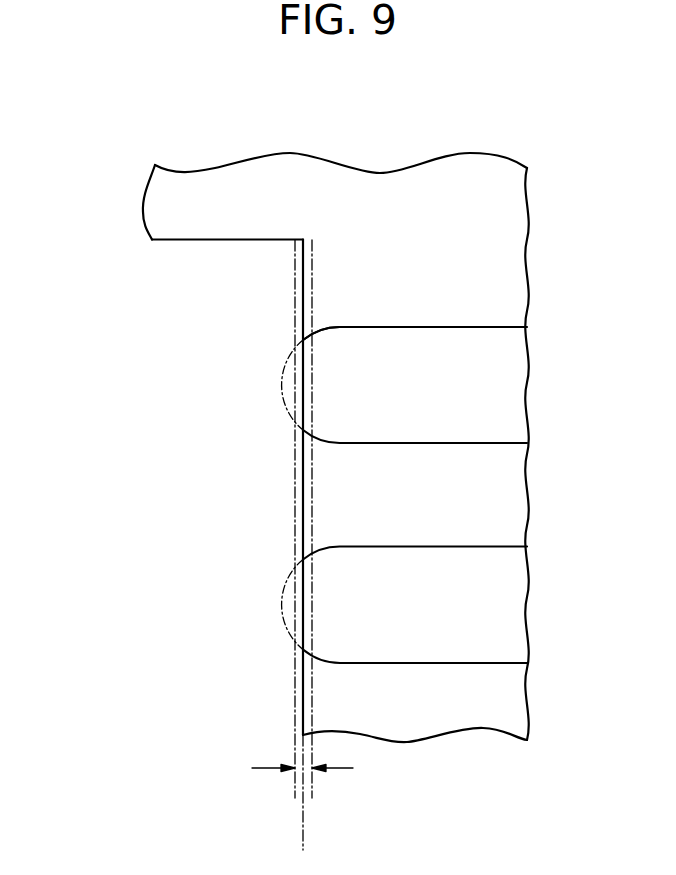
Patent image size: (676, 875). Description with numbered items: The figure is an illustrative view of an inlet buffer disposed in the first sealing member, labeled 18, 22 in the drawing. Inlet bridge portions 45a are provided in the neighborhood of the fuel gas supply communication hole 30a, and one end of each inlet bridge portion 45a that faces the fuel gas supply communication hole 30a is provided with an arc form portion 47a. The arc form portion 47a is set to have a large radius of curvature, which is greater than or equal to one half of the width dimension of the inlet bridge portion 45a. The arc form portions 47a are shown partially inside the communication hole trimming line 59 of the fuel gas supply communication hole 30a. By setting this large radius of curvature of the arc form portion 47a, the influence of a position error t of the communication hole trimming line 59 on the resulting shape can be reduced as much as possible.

The rotor core 18 is at (336, 413).
The stator core 22 is at (412, 110).
The fuel gas supply communication hole 30a is at (236, 240).
The inlet bridge portion 45a is at (452, 342).
The arc form portion 47a is at (322, 326).
The communication hole trimming line 59 is at (303, 832).
The position error t is at (302, 755).